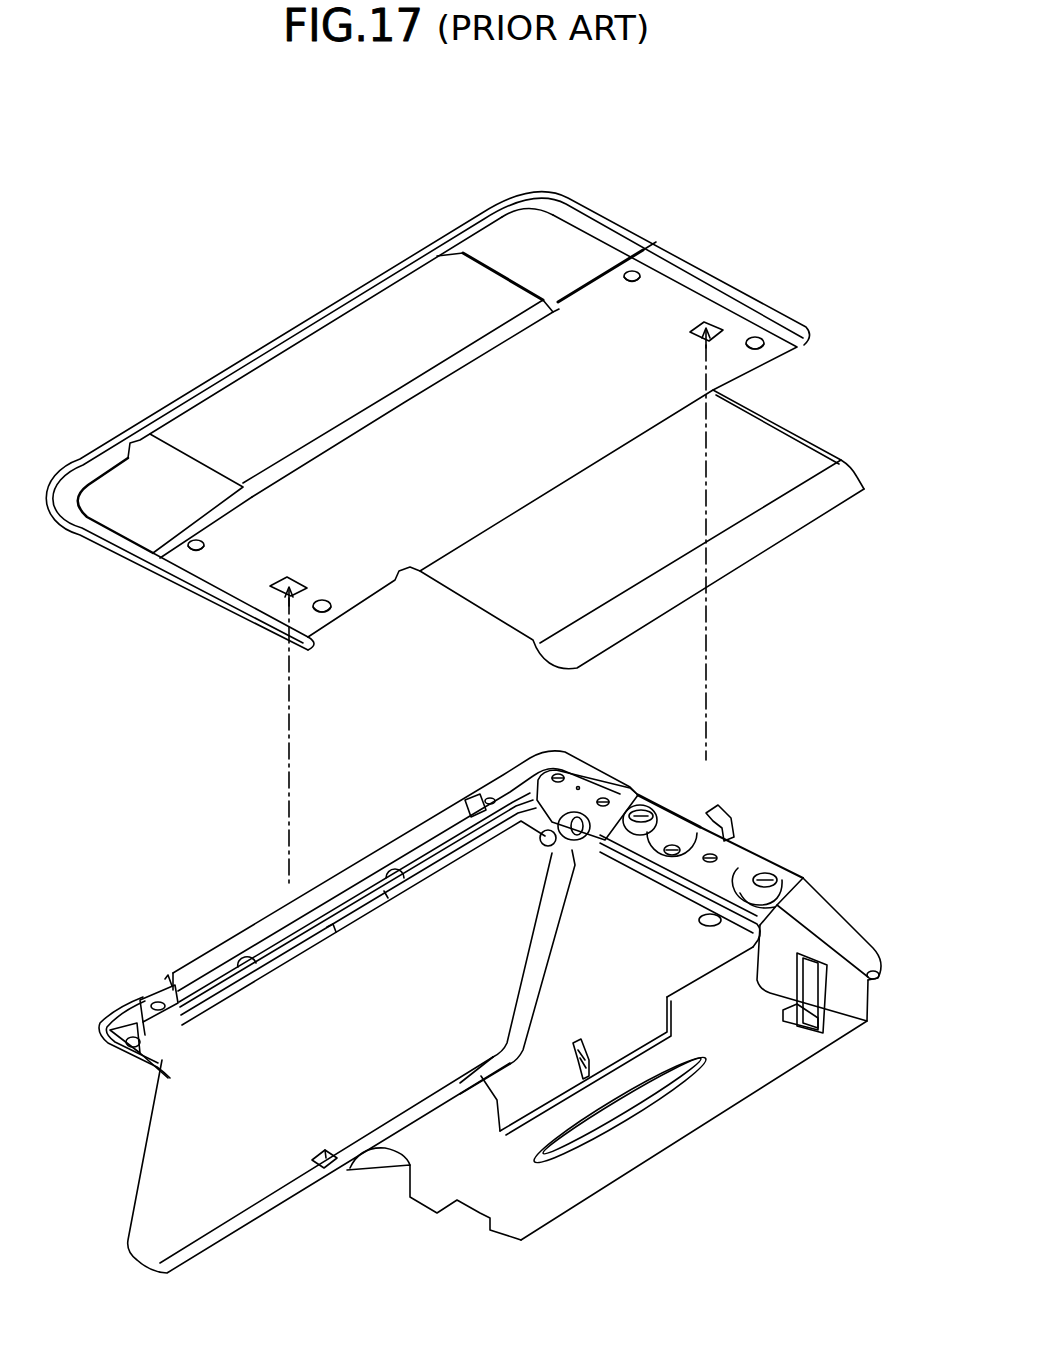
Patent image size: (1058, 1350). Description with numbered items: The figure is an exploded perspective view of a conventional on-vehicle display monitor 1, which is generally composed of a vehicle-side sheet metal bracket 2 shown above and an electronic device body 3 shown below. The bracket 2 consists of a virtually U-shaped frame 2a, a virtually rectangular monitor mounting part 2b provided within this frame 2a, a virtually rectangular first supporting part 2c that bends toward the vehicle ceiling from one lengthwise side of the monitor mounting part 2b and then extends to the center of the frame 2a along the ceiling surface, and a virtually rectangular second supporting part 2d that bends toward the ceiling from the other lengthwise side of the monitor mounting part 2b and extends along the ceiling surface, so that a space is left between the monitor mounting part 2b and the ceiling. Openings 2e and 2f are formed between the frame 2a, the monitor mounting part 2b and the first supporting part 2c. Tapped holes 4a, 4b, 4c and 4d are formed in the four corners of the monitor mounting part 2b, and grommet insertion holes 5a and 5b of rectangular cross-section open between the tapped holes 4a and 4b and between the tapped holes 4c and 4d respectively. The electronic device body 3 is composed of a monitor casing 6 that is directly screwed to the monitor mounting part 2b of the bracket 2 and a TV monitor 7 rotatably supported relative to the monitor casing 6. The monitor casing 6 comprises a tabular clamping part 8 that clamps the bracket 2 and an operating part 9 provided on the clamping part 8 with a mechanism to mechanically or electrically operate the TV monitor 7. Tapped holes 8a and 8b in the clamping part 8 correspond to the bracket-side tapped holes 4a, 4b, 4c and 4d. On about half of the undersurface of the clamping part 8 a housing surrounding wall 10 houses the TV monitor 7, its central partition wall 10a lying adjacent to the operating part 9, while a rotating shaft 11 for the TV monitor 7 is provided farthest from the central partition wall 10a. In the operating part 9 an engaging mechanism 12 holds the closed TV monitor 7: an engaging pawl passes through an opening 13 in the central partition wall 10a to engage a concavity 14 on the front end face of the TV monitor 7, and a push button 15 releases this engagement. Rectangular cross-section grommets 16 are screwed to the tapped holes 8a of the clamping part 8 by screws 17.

The on-vehicle display monitor 1 is at (606, 178).
The bracket 2 is at (455, 494).
The frame 2a is at (271, 353).
The monitor mounting part 2b is at (421, 528).
The first supporting part 2c is at (368, 318).
The second supporting part 2d is at (812, 452).
The opening 2e is at (547, 238).
The opening 2f is at (118, 488).
The electronic device body 3 is at (490, 1016).
The tapped hole 4a is at (636, 271).
The tapped hole 4b is at (759, 337).
The tapped hole 4c is at (324, 614).
The tapped hole 4d is at (198, 552).
The grommet insertion hole 5a is at (708, 318).
The grommet insertion hole 5b is at (288, 592).
The monitor casing 6 is at (750, 852).
The TV monitor 7 is at (220, 1192).
The clamping part 8 is at (633, 982).
The tapped hole 8a is at (641, 812).
The tapped hole 8b is at (768, 877).
The operating part 9 is at (607, 1103).
The housing surrounding wall 10 is at (796, 902).
The central partition wall 10a is at (655, 1010).
The rotating shaft 11 is at (530, 800).
The engaging mechanism 12 is at (499, 1169).
The opening 13 is at (590, 1057).
The concavity 14 is at (323, 1165).
The push button 15 is at (578, 1148).
The grommet 16 is at (722, 820).
The screw 17 is at (710, 854).